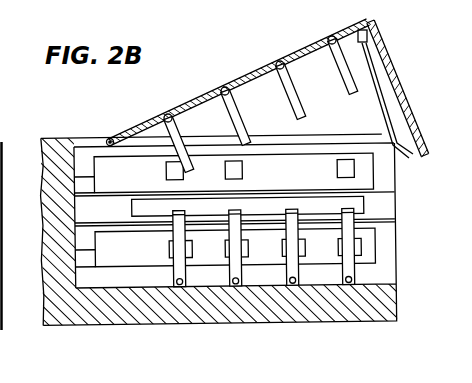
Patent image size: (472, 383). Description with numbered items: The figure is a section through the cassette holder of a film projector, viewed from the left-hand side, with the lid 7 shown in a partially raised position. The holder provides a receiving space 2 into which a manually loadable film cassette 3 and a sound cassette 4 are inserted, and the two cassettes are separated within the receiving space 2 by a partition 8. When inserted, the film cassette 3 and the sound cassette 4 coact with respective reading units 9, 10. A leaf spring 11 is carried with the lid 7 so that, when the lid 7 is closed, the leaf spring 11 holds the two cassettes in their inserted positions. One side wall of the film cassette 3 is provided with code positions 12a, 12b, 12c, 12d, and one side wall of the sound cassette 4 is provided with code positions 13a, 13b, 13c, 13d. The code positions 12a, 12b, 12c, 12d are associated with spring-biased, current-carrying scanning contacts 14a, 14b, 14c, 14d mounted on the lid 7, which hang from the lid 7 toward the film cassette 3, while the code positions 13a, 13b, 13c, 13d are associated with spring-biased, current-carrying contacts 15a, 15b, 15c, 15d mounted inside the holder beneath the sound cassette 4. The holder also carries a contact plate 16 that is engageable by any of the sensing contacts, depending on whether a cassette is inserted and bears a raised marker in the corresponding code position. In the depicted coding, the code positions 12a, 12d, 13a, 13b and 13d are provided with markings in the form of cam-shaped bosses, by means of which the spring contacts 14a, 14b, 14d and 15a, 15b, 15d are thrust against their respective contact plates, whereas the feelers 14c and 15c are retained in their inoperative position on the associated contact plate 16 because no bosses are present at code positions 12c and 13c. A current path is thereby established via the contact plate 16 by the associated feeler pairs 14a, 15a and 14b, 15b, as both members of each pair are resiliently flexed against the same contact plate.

The receiving space 2 is at (378, 223).
The film cassette 3 is at (105, 177).
The sound cassette 4 is at (105, 260).
The lid 7 is at (378, 38).
The partition 8 is at (80, 213).
The reading unit 9 is at (78, 181).
The reading unit 10 is at (80, 256).
The leaf spring 11 is at (383, 104).
The code position 12a is at (167, 176).
The code position 12b is at (232, 163).
The code position 12c is at (280, 173).
The code position 12d is at (344, 161).
The code position 13a is at (169, 250).
The code position 13b is at (194, 252).
The code position 13c is at (249, 252).
The code position 13d is at (357, 249).
The scanning contact 14a is at (163, 118).
The scanning contact 14b is at (221, 95).
The scanning contact 14c is at (278, 80).
The scanning contact 14d is at (329, 53).
The contact 15a is at (175, 276).
The contact 15b is at (238, 288).
The contact 15c is at (300, 275).
The contact 15d is at (351, 272).
The contact plate 16 is at (370, 206).